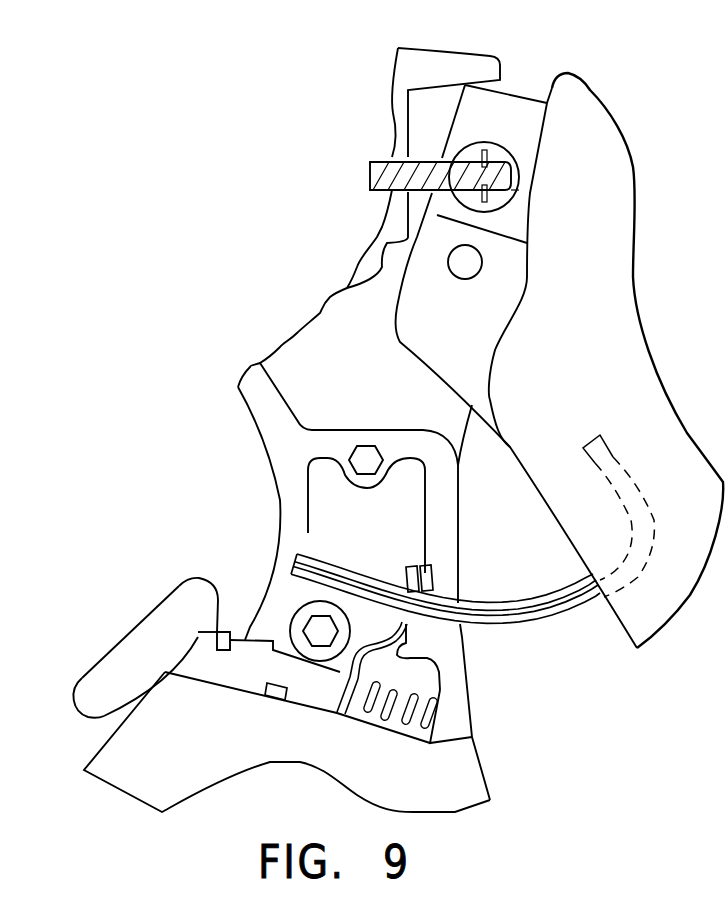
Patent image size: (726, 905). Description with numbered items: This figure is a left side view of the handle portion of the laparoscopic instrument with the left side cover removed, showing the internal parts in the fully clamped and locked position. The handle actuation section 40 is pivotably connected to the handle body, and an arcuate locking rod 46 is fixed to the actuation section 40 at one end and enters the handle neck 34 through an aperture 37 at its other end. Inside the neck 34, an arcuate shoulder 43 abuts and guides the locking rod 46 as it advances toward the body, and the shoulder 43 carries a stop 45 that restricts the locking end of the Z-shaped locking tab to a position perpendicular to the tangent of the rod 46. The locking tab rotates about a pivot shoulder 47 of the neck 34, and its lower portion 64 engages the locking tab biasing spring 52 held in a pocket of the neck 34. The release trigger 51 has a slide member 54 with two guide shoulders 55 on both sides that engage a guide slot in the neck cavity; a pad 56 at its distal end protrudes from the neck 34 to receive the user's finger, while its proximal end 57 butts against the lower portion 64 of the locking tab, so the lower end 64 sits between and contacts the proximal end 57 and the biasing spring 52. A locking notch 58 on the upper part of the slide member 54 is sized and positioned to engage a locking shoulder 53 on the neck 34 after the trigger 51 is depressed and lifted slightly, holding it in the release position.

The handle neck 34 is at (283, 458).
The handle actuation section 40 is at (613, 270).
The arcuate shoulder 43 is at (330, 553).
The stop 45 is at (425, 577).
The aperture 37 is at (455, 602).
The arcuate locking rod 46 is at (540, 602).
The pivot shoulder 47 is at (435, 667).
The locking tab biasing spring 52 is at (405, 714).
The proximal end 57 is at (355, 707).
The lower portion of the locking tab 64 is at (337, 713).
The guide shoulders 55 is at (270, 698).
The slide member 54 is at (193, 663).
The pad 56 is at (141, 631).
The release trigger 51 is at (190, 600).
The locking shoulder 53 is at (237, 641).
The locking notch 58 is at (233, 632).